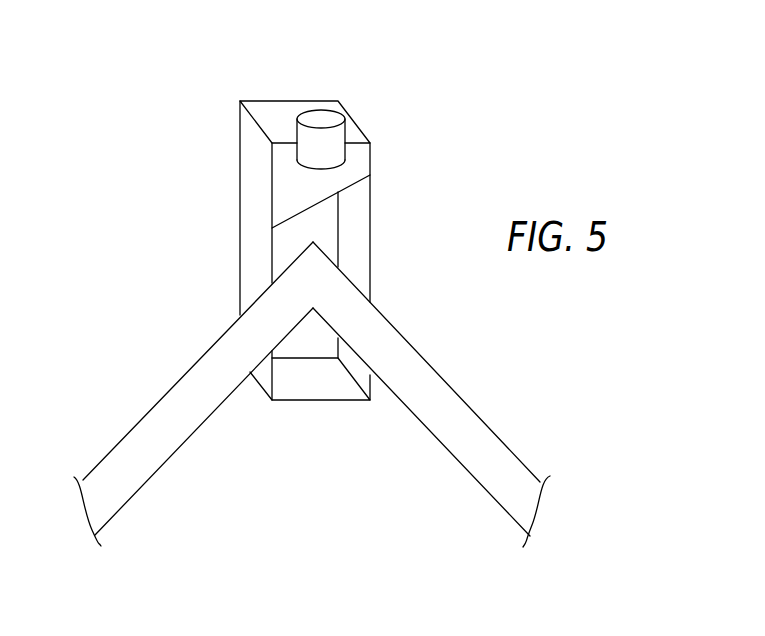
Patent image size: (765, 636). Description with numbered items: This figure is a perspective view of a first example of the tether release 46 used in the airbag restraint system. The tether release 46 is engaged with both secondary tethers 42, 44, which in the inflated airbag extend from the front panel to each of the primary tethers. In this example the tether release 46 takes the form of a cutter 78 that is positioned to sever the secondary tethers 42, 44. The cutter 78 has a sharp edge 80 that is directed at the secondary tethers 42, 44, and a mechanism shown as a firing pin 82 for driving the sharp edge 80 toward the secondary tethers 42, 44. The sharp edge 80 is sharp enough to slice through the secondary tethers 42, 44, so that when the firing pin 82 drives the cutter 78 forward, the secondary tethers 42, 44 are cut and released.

The secondary tether 42 is at (485, 420).
The secondary tether 44 is at (138, 423).
The tether release 46 is at (135, 113).
The cutter 78 is at (272, 195).
The sharp edge 80 is at (343, 188).
The firing pin 82 is at (318, 110).